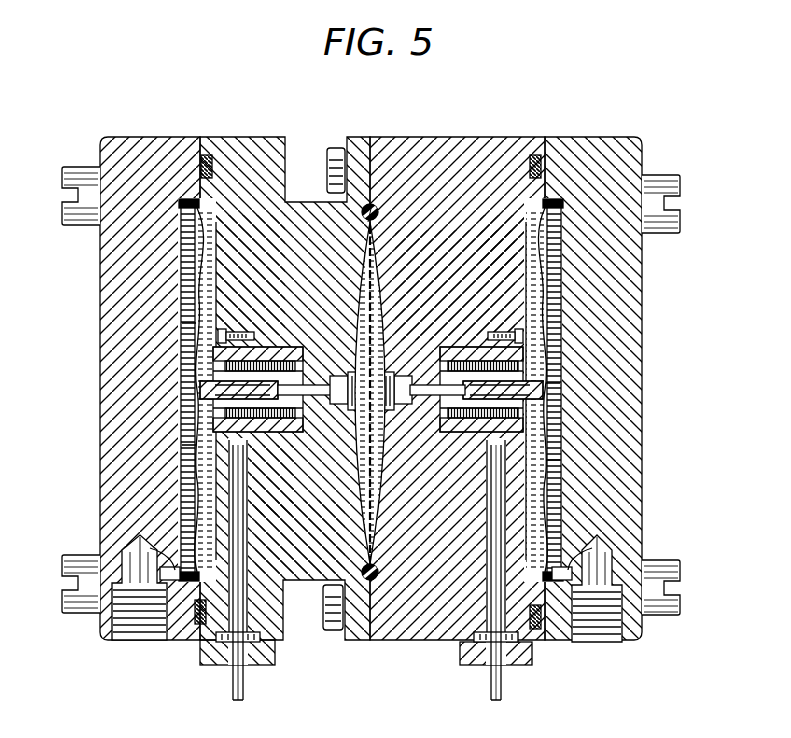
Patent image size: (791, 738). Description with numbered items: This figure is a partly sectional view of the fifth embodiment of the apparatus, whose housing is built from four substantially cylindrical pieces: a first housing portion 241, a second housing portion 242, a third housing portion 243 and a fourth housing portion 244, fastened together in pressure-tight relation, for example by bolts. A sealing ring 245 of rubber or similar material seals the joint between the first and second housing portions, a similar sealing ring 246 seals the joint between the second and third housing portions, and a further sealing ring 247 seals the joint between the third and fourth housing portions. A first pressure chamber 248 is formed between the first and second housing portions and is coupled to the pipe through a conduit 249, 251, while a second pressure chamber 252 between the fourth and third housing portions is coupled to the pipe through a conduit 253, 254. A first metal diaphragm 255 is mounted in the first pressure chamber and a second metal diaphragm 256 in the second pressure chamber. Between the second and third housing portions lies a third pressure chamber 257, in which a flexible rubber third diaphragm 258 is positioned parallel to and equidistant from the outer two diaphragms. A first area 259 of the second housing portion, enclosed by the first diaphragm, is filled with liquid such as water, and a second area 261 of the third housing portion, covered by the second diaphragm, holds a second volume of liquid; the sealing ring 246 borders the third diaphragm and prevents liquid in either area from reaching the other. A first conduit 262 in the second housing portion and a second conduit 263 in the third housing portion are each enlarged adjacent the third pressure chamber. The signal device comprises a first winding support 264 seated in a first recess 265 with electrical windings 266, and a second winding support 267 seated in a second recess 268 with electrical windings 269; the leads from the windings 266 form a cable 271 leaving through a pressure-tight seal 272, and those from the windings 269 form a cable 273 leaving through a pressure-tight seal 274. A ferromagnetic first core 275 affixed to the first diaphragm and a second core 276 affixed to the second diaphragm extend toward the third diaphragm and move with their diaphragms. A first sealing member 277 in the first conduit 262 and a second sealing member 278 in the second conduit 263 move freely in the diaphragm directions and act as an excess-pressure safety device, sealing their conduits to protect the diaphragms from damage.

The first housing portion 241 is at (643, 378).
The second housing portion 242 is at (480, 150).
The third housing portion 243 is at (265, 147).
The fourth housing portion 244 is at (104, 281).
The sealing ring 245 is at (548, 165).
The sealing ring 246 is at (378, 208).
The sealing ring 247 is at (207, 153).
The first pressure chamber 248 is at (563, 258).
The conduit 249 is at (590, 642).
The conduit 251 is at (570, 545).
The second pressure chamber 252 is at (185, 245).
The conduit 253 is at (145, 645).
The conduit 254 is at (175, 545).
The first diaphragm 255 is at (560, 460).
The second diaphragm 256 is at (182, 323).
The third pressure chamber 257 is at (374, 478).
The third diaphragm 258 is at (300, 537).
The first area 259 is at (534, 240).
The second area 261 is at (218, 246).
The first conduit 262 is at (426, 418).
The second conduit 263 is at (304, 420).
The first winding support 264 is at (521, 325).
The first recess 265 is at (444, 340).
The electrical windings 266 is at (444, 436).
The second winding support 267 is at (182, 445).
The second recess 268 is at (268, 340).
The electrical windings 269 is at (272, 452).
The cable 271 is at (504, 690).
The pressure-tight seal 272 is at (470, 665).
The cable 273 is at (231, 690).
The pressure-tight seal 274 is at (266, 662).
The first core 275 is at (560, 383).
The second core 276 is at (198, 385).
The first sealing member 277 is at (398, 370).
The second sealing member 278 is at (342, 370).